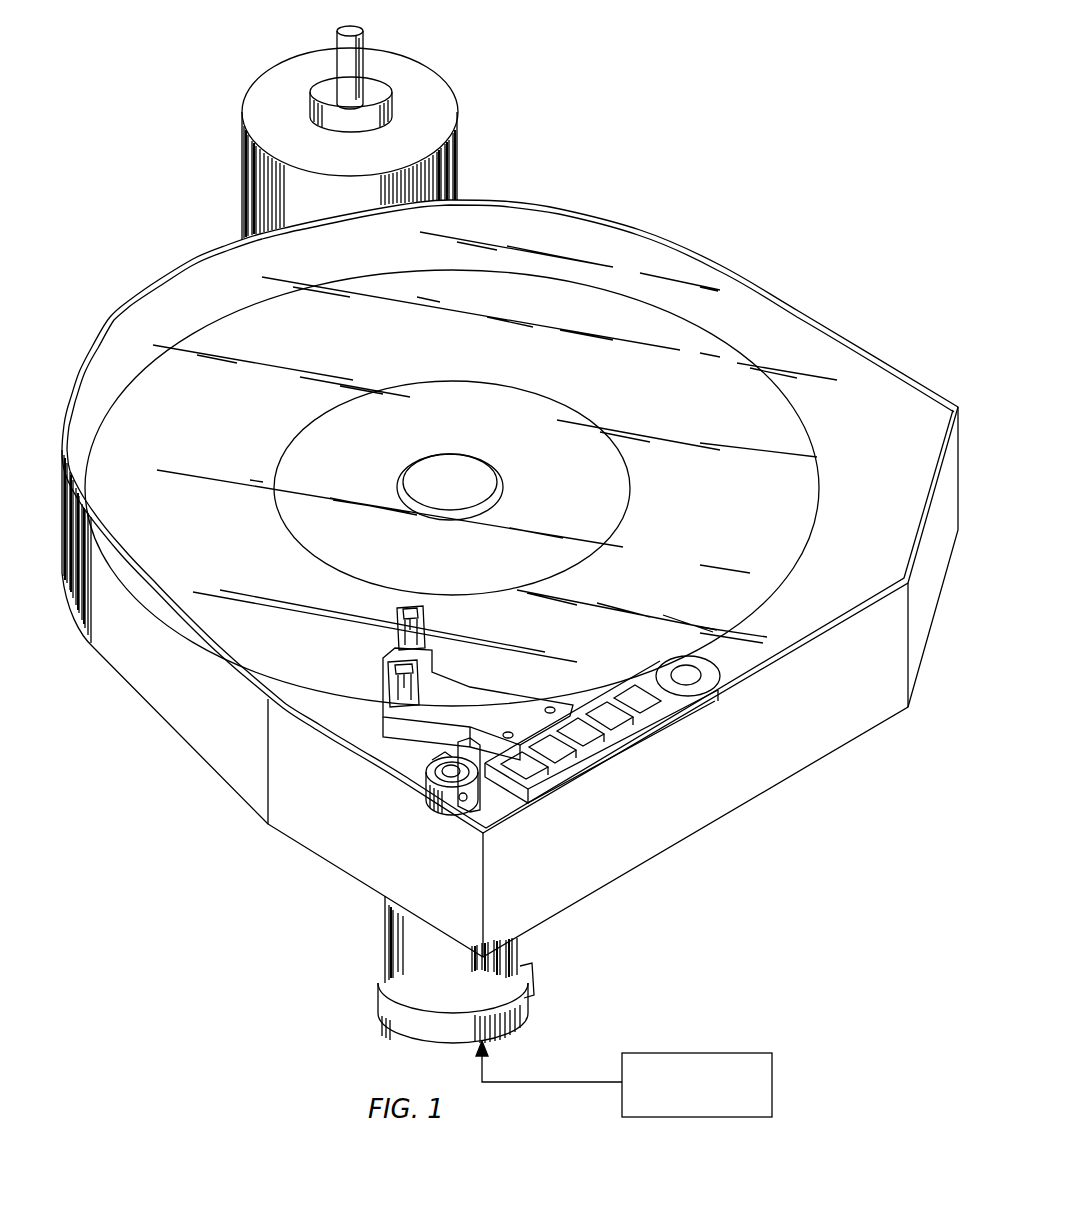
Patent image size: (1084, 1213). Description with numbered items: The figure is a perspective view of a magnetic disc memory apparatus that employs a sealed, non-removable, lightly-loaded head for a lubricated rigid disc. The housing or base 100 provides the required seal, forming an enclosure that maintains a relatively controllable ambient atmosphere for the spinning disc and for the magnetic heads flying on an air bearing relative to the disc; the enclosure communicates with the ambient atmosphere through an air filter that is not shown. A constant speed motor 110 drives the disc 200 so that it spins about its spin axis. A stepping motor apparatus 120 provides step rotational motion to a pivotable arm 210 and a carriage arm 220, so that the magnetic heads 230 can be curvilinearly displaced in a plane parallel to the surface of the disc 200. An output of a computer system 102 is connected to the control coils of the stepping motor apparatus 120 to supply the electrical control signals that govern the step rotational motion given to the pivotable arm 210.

The housing or base 100 is at (802, 312).
The constant speed motor 110 is at (457, 108).
The stepping motor apparatus 120 is at (383, 948).
The disc 200 is at (610, 290).
The pivotable arm 210 is at (585, 757).
The carriage arm 220 is at (402, 738).
The magnetic heads 230 is at (410, 597).
The computer system 102 is at (717, 1053).